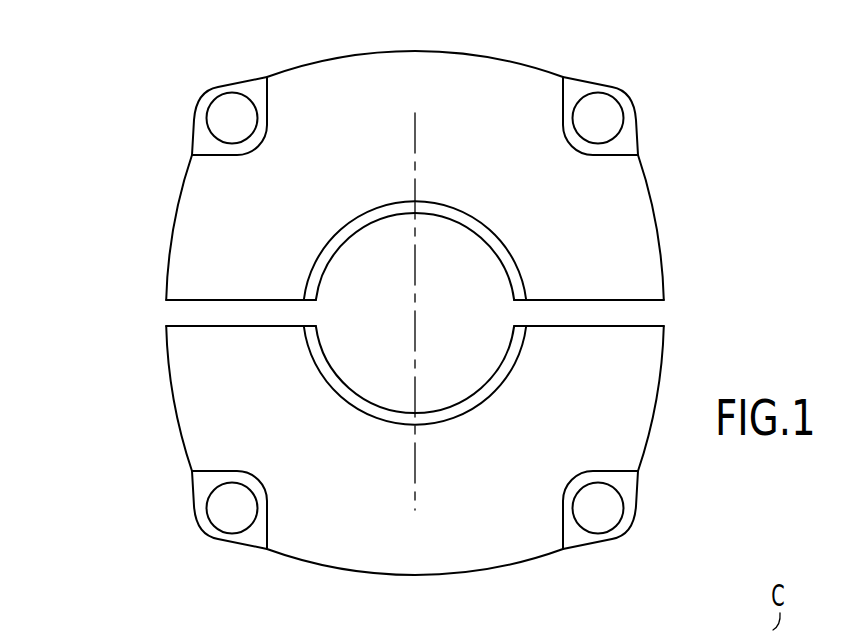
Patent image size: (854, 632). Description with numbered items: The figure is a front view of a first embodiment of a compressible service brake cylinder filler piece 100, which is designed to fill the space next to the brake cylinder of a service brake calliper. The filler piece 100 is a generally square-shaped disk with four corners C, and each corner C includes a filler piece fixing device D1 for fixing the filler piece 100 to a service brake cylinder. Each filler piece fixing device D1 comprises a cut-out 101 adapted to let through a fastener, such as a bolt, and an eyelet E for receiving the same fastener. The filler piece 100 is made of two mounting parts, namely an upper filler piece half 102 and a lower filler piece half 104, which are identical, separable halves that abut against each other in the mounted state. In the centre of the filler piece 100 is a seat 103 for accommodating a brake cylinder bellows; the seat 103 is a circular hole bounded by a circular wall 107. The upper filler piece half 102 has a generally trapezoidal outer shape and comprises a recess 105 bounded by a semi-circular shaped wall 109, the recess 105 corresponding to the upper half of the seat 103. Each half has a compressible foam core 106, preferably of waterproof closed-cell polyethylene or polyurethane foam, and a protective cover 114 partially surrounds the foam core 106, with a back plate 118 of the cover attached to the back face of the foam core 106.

The service brake cylinder filler piece 100 is at (78, 268).
The upper filler piece half 102 is at (167, 237).
The lower filler piece half 104 is at (167, 397).
The cut-out 101 is at (202, 144).
The eyelet E is at (228, 113).
The corner C is at (213, 87).
The filler piece fixing device D1 is at (95, 65).
The protective cover 114 is at (478, 118).
The back plate 118 is at (615, 248).
The seat 103 is at (326, 371).
The foam core 106 is at (477, 214).
The recess 105 is at (475, 268).
The circular wall 107 is at (392, 273).
The semi-circular shaped wall 109 is at (347, 228).